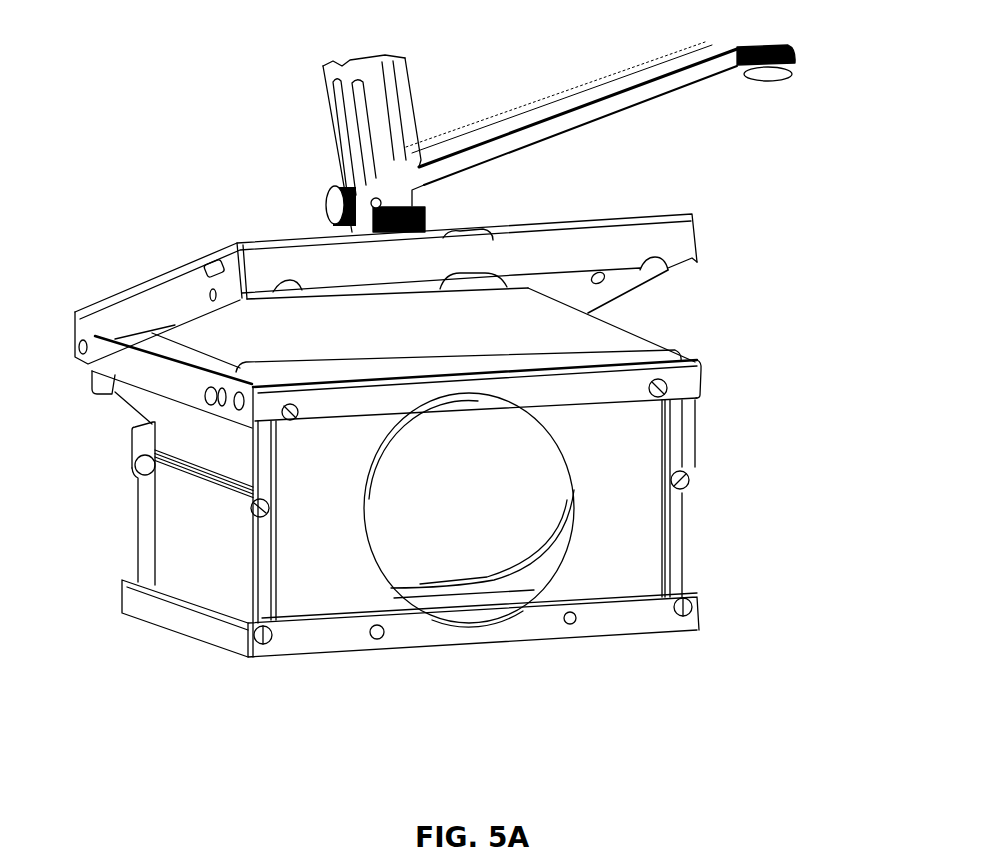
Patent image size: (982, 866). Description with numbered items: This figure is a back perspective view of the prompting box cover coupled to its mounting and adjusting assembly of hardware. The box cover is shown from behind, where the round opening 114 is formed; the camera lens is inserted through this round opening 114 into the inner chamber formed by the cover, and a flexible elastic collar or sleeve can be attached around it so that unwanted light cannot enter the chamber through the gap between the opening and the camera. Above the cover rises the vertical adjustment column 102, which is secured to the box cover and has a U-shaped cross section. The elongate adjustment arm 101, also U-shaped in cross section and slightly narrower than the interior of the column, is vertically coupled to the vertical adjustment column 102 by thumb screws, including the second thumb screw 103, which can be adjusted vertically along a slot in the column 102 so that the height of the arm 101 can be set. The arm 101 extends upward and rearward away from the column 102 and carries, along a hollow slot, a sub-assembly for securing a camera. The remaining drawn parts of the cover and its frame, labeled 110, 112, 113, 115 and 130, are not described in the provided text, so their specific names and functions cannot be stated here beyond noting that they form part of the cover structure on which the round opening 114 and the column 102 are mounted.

The elongate adjustment arm 101 is at (627, 77).
The vertical adjustment column 102 is at (333, 100).
The second thumb screw 103 is at (333, 206).
The lid 110 is at (673, 235).
The side post 112 is at (182, 530).
The frame 113 is at (675, 556).
The round opening 114 is at (540, 470).
The top plate 115 is at (597, 331).
The brace 130 is at (173, 470).